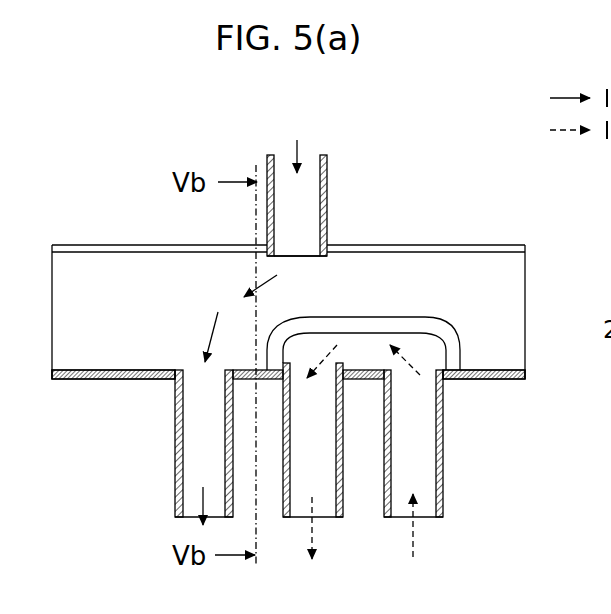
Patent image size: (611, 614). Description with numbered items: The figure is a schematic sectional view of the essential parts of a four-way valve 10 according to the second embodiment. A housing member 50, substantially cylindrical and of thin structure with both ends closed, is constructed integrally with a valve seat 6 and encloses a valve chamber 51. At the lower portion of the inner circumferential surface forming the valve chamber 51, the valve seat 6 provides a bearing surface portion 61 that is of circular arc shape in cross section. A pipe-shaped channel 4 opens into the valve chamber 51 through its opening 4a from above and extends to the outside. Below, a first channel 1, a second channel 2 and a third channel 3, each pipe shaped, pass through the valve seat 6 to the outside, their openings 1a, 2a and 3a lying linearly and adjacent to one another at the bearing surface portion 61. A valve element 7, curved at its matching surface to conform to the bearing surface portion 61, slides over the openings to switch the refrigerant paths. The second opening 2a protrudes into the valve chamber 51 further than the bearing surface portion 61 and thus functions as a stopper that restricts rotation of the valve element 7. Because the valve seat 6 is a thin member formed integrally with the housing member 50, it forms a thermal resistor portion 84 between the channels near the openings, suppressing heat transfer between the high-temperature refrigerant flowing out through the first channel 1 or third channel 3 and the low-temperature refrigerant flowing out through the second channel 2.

The four-way valve 10 is at (52, 179).
The housing member 50 is at (525, 272).
The valve seat 6 is at (503, 380).
The bearing surface portion 61 is at (490, 371).
The valve chamber 51 is at (78, 365).
The channel 4 is at (327, 168).
The opening of channel 4 4a is at (313, 250).
The valve element 7 is at (462, 320).
The first channel 1 is at (186, 480).
The first opening 1a is at (194, 371).
The thermal resistor portion 84 is at (248, 382).
The second channel 2 is at (330, 489).
The second opening 2a is at (312, 367).
The third channel 3 is at (428, 469).
The third opening 3a is at (420, 371).